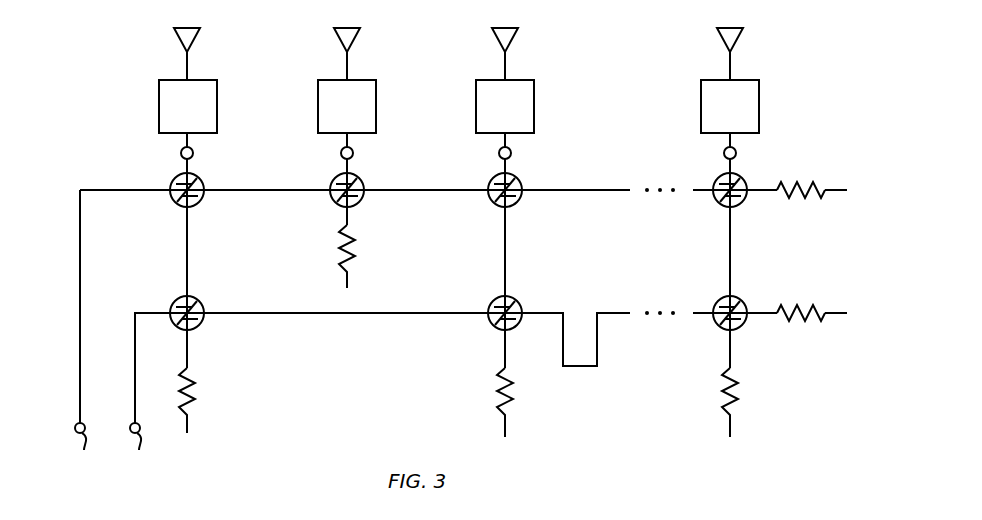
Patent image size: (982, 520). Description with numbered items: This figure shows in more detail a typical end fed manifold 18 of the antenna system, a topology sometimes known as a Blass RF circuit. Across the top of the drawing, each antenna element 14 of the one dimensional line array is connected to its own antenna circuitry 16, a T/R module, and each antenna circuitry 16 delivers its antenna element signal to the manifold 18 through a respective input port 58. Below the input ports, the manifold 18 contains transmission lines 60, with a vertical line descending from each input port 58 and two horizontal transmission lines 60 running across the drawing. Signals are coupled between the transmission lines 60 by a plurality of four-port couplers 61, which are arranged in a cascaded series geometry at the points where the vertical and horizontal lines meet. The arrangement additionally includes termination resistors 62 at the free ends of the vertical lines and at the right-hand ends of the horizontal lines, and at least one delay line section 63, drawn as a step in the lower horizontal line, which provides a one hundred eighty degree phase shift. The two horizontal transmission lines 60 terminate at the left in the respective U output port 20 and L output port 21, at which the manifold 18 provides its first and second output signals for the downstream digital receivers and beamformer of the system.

The antenna element 14 is at (180, 42).
The antenna circuitry 16 is at (159, 110).
The input port 58 is at (181, 153).
The transmission line 60 is at (80, 210).
The four-port coupler 61 is at (200, 204).
The termination resistor 62 is at (195, 383).
The delay line section 63 is at (598, 345).
The U output port 20 is at (75, 428).
The L output port 21 is at (130, 428).
The manifold 18 is at (334, 403).